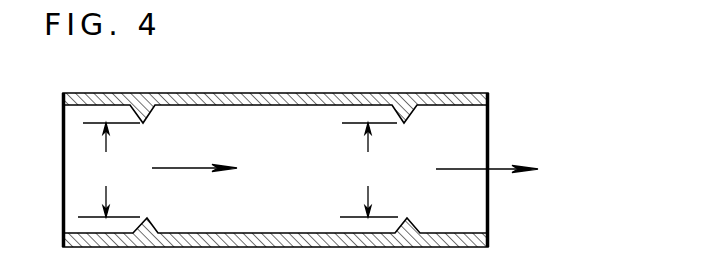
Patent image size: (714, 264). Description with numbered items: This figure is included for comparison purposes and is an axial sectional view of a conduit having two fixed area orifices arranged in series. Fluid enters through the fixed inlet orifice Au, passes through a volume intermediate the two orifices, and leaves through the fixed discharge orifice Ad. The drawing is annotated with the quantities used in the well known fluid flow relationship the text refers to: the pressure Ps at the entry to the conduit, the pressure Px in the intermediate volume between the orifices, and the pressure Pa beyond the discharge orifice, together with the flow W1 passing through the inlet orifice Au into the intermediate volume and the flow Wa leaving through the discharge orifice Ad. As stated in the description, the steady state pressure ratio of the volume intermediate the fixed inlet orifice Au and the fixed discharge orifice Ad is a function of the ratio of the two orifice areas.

The supply pressure Ps is at (17, 172).
The fixed inlet orifice Au is at (109, 170).
The flow rate through upstream orifice W1 is at (194, 150).
The intermediate chamber pressure Px is at (276, 173).
The fixed discharge orifice Ad is at (369, 170).
The flow rate through downstream orifice Wa is at (275, 170).
The ambient/outlet pressure Pa is at (502, 173).